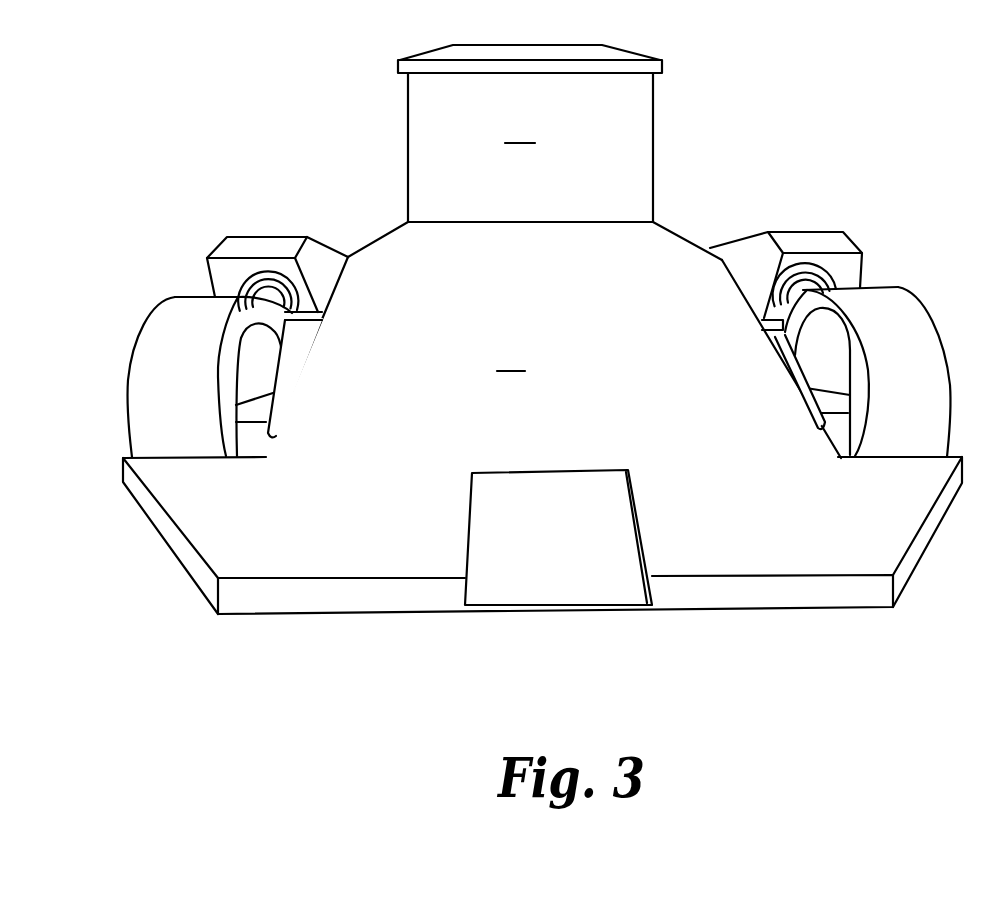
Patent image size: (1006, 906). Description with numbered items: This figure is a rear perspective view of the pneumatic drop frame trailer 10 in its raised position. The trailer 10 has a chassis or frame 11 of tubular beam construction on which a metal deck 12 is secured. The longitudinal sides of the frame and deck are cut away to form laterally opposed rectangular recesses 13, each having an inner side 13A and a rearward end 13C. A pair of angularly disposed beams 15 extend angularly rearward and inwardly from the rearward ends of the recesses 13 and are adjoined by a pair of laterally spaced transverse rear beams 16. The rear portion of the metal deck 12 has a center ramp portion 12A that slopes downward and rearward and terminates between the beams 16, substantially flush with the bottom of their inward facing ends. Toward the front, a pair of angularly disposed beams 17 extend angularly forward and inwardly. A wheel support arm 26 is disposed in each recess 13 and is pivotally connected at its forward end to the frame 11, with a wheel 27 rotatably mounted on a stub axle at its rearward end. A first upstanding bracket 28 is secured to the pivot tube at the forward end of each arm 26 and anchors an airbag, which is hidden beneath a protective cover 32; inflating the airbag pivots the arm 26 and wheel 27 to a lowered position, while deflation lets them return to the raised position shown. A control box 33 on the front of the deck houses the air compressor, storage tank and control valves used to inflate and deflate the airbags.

The trailer 10 is at (826, 88).
The frame 11 is at (197, 587).
The metal deck 12 is at (554, 312).
The center ramp portion 12A is at (535, 595).
The rectangular recess 13 is at (546, 379).
The inner side 13A is at (287, 409).
The rearward end 13C is at (192, 456).
The angularly disposed beam 15 is at (185, 557).
The transverse rear beam 16 is at (273, 603).
The angularly disposed beam 17 is at (381, 236).
The wheel support arm 26 is at (293, 367).
The wheel 27 is at (167, 322).
The first upstanding bracket 28 is at (290, 312).
The protective cover 32 is at (237, 242).
The control box 33 is at (530, 133).